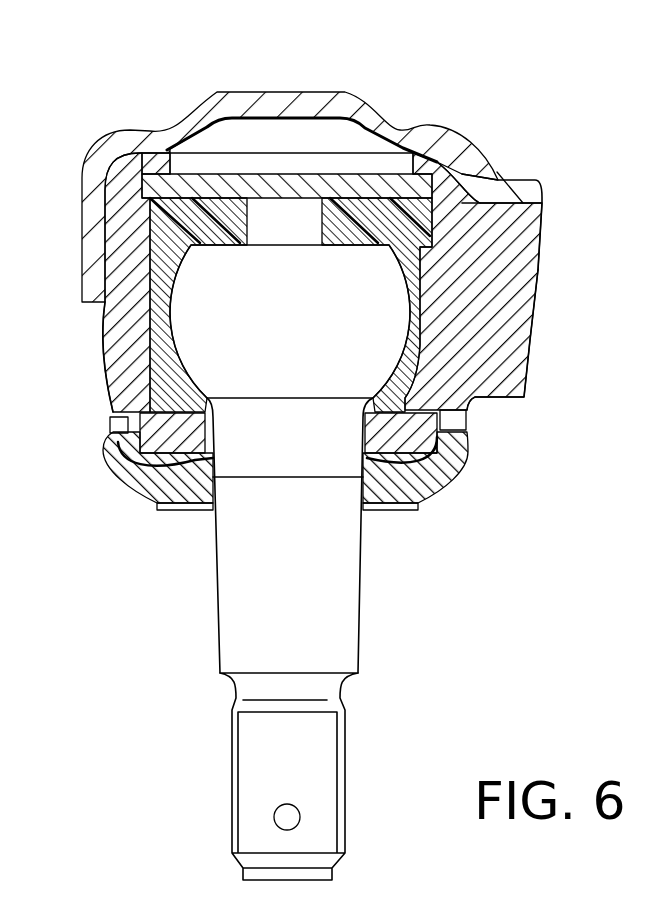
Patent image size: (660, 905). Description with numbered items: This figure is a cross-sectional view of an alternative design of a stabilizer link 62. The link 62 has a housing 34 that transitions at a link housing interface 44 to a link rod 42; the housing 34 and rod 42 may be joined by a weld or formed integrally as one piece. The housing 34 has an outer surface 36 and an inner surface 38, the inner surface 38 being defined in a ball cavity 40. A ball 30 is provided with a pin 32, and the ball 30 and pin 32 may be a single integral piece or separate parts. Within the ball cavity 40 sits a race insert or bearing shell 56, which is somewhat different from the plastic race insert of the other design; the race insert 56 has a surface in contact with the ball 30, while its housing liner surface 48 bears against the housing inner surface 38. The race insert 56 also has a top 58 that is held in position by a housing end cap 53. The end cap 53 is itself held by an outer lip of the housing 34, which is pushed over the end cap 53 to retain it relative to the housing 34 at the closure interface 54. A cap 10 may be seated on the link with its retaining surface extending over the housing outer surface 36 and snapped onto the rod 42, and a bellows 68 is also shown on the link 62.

The cap 10 is at (240, 92).
The ball 30 is at (387, 325).
The stud/pin 32 is at (228, 585).
The housing 34 is at (115, 340).
The housing outer surface 36 is at (101, 314).
The housing interior surface 38 is at (110, 407).
The ball cavity 40 is at (463, 172).
The link rod 42 is at (526, 400).
The link housing interface 44 is at (472, 408).
The housing liner surface 48 is at (496, 185).
The housing closure cap 53 is at (357, 187).
The closure interface 54 is at (162, 174).
The alternate race insert 56 is at (398, 217).
The alternate upper race portion 58 is at (208, 210).
The stabilizer link 62 is at (400, 538).
The bellows 68 is at (170, 490).